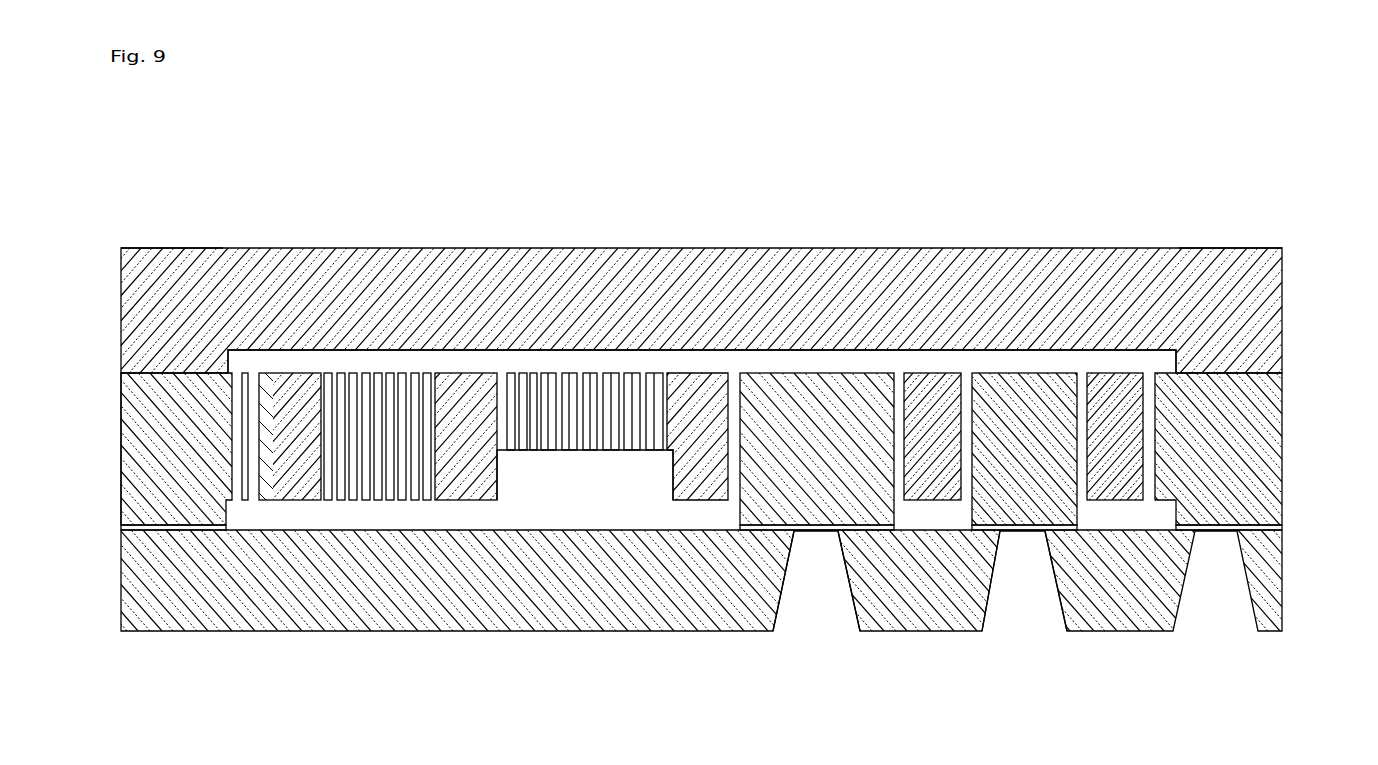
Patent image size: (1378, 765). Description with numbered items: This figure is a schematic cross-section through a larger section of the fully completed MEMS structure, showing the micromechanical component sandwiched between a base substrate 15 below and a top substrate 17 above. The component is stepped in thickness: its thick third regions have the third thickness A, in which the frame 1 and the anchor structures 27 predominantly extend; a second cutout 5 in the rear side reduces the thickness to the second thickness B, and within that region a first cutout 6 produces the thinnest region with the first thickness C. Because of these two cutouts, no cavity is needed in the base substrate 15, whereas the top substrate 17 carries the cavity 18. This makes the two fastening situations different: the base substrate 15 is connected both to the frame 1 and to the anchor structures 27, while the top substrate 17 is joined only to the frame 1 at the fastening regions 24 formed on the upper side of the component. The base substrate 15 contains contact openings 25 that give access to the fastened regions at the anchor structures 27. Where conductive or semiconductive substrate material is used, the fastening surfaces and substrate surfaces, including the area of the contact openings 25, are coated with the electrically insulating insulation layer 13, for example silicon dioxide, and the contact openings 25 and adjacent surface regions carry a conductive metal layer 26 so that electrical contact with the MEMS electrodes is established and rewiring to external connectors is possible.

The frame 1 is at (165, 502).
The second cutout 5 is at (360, 524).
The first cutout 6 is at (605, 487).
The electrically insulating material / insulation layer 13 is at (1282, 526).
The base substrate 15 is at (1280, 600).
The top substrate 17 is at (1282, 347).
The cavity 18 is at (482, 369).
The fastening regions 24 is at (122, 244).
The contact openings 25 is at (818, 598).
The metal layer 26 is at (985, 622).
The anchor structures 27 is at (757, 497).
The third thickness A is at (112, 377).
The second thickness B is at (271, 380).
The first thickness C is at (683, 375).